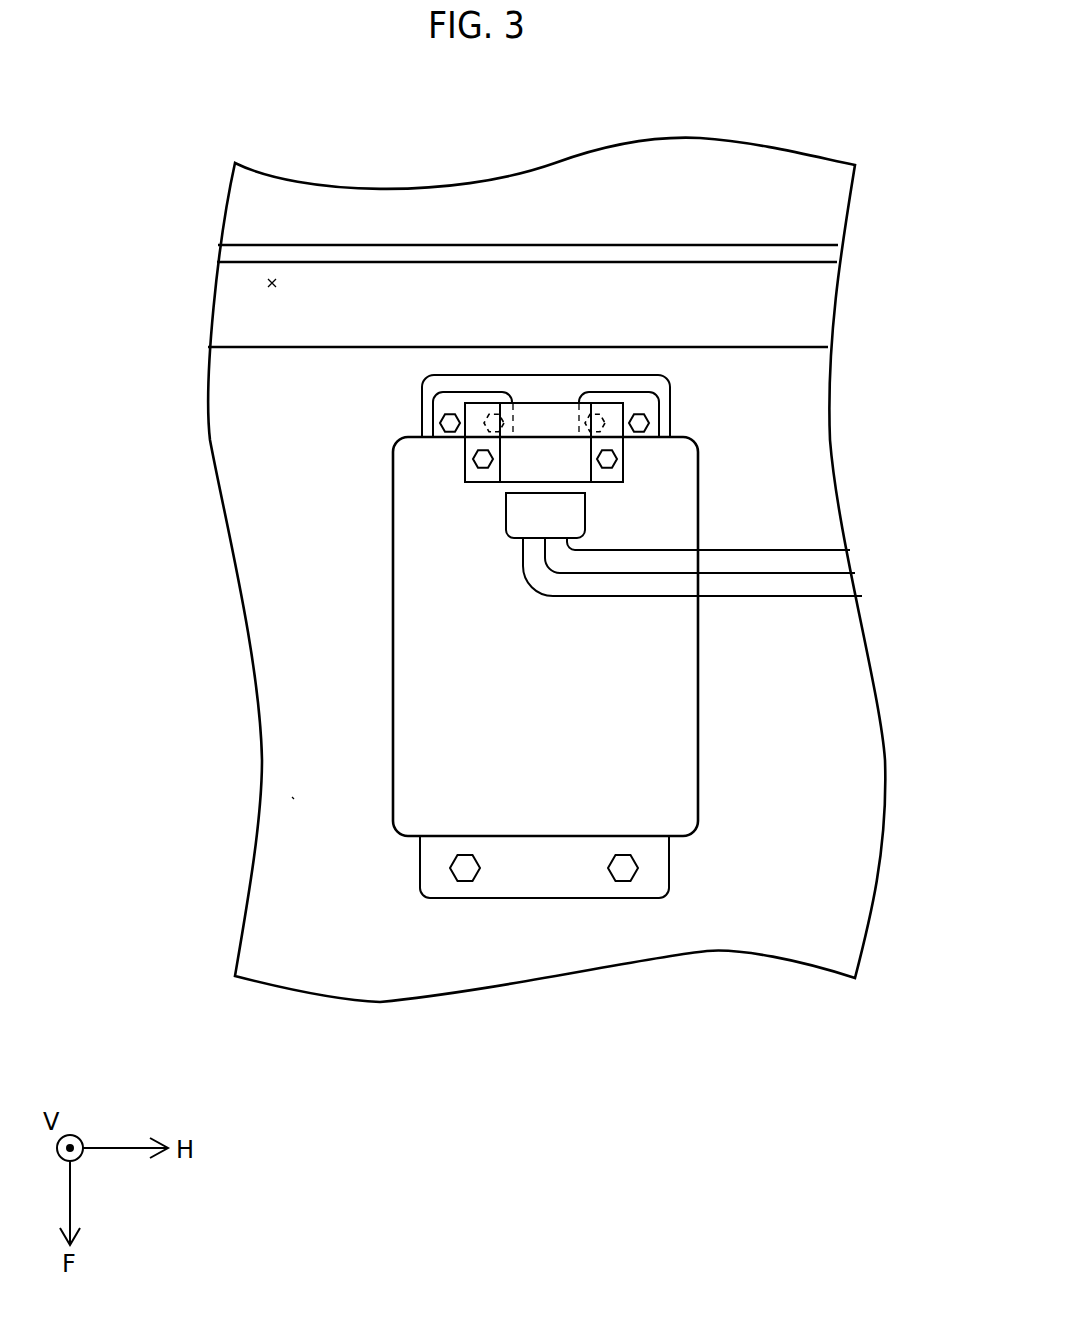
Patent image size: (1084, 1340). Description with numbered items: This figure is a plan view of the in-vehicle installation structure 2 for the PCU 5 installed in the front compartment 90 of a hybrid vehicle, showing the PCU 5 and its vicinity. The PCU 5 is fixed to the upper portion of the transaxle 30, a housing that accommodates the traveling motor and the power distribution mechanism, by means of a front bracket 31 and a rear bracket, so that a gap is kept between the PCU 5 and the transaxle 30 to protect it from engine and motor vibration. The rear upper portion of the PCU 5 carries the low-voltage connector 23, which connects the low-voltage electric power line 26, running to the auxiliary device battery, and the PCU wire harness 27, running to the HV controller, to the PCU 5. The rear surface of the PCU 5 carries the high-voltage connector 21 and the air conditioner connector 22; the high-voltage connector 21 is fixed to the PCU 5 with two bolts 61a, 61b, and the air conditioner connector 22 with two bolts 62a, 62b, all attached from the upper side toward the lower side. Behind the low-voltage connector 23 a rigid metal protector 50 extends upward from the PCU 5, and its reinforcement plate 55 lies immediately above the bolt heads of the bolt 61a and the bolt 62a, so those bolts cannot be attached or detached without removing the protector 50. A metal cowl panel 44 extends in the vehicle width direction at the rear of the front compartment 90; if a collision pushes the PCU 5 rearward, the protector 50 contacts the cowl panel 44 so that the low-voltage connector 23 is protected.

The in-vehicle installation structure 2 is at (188, 153).
The PCU 5 is at (418, 645).
The high-voltage connector 21 is at (645, 402).
The air conditioner connector 22 is at (442, 403).
The low-voltage connector 23 is at (530, 515).
The low-voltage electric power line 26 is at (805, 557).
The PCU wire harness 27 is at (813, 588).
The transaxle 30 is at (292, 797).
The front bracket 31 is at (533, 885).
The cowl panel 44 is at (683, 245).
The protector 50 is at (458, 481).
The reinforcement plate 55 is at (527, 417).
The bolt 61a is at (600, 411).
The bolt 61b is at (650, 423).
The bolt 62a is at (491, 412).
The bolt 62b is at (440, 423).
The front compartment 90 is at (270, 283).